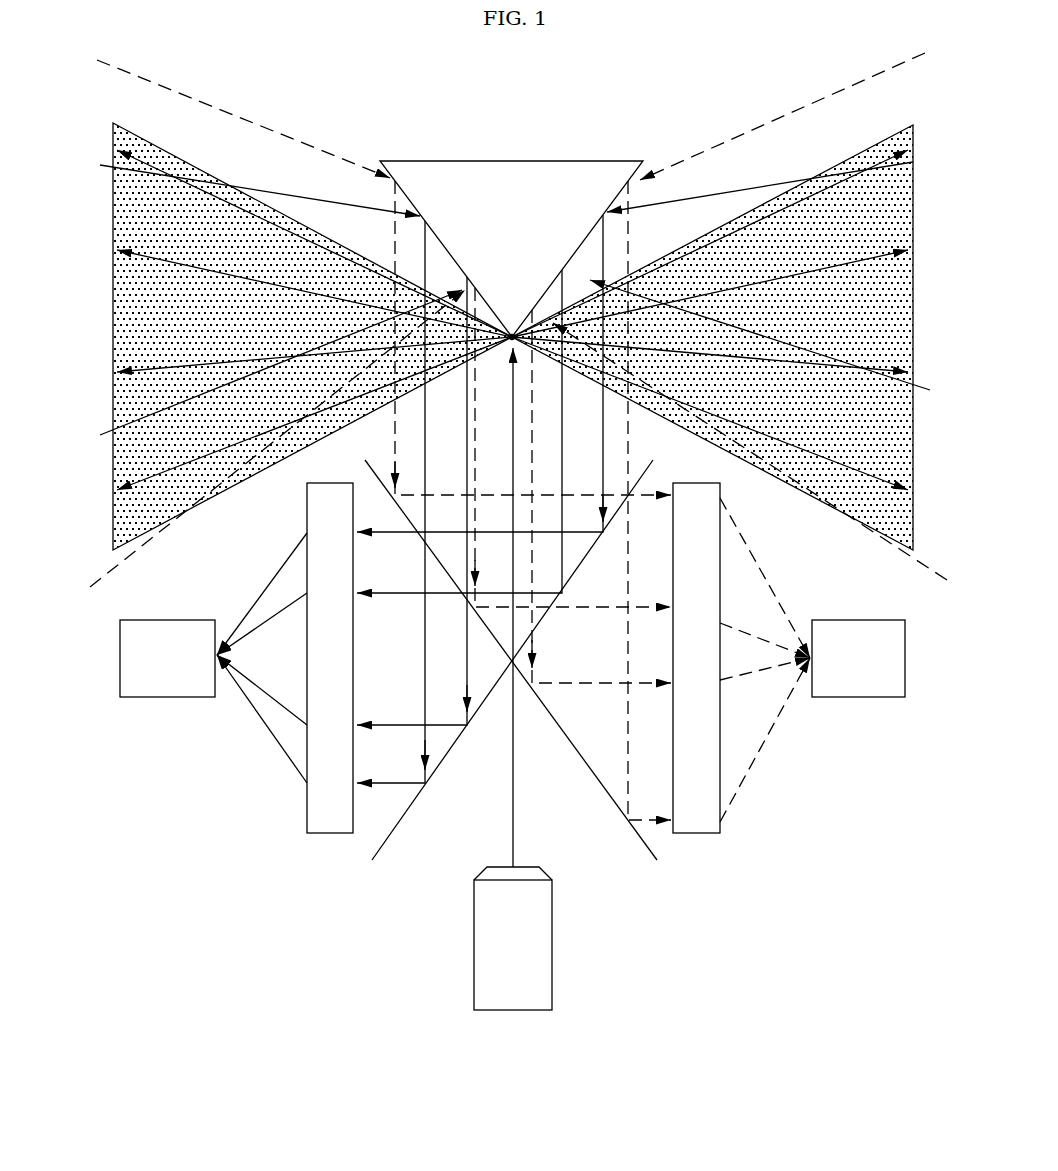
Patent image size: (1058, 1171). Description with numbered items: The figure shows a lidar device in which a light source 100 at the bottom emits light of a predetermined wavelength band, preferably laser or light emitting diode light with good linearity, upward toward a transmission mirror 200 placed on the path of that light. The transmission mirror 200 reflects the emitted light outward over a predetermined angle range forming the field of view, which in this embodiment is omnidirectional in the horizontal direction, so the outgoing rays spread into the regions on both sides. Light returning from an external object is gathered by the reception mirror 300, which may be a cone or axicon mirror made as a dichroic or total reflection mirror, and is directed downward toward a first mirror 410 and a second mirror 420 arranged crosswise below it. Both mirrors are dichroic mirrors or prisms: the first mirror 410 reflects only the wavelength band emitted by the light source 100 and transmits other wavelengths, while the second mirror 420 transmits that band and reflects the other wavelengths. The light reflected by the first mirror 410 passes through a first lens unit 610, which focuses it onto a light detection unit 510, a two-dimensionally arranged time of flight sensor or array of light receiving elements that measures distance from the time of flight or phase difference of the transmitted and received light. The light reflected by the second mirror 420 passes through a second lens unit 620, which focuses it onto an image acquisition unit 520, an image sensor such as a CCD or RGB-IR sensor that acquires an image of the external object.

The light source 100 is at (509, 1012).
The transmission mirror 200 is at (512, 333).
The reception mirror 300 is at (438, 160).
The first mirror 410 is at (390, 833).
The second mirror 420 is at (633, 860).
The light detection unit 510 is at (165, 700).
The image acquisition unit 520 is at (855, 700).
The first lens unit 610 is at (333, 835).
The second lens unit 620 is at (693, 833).